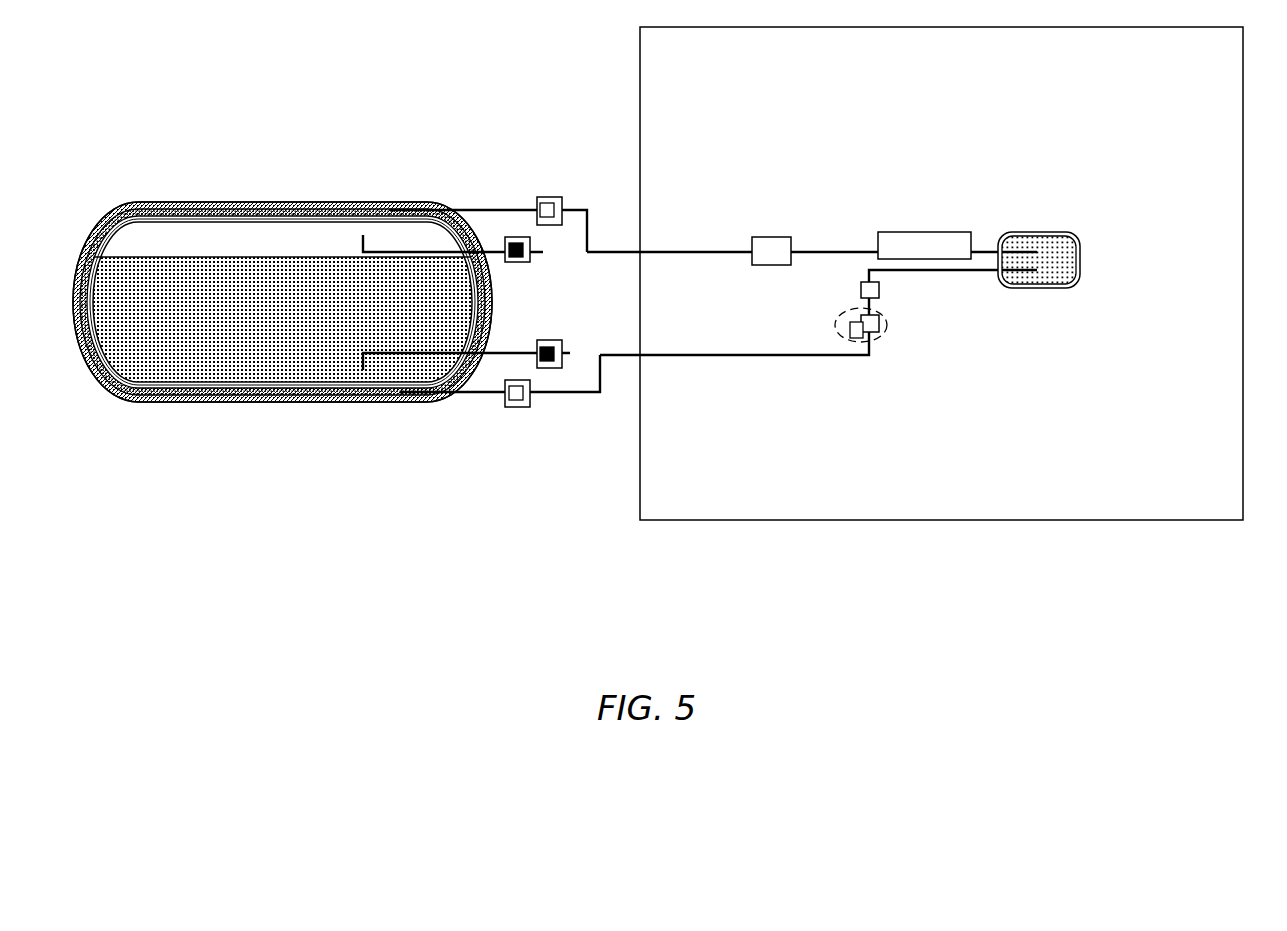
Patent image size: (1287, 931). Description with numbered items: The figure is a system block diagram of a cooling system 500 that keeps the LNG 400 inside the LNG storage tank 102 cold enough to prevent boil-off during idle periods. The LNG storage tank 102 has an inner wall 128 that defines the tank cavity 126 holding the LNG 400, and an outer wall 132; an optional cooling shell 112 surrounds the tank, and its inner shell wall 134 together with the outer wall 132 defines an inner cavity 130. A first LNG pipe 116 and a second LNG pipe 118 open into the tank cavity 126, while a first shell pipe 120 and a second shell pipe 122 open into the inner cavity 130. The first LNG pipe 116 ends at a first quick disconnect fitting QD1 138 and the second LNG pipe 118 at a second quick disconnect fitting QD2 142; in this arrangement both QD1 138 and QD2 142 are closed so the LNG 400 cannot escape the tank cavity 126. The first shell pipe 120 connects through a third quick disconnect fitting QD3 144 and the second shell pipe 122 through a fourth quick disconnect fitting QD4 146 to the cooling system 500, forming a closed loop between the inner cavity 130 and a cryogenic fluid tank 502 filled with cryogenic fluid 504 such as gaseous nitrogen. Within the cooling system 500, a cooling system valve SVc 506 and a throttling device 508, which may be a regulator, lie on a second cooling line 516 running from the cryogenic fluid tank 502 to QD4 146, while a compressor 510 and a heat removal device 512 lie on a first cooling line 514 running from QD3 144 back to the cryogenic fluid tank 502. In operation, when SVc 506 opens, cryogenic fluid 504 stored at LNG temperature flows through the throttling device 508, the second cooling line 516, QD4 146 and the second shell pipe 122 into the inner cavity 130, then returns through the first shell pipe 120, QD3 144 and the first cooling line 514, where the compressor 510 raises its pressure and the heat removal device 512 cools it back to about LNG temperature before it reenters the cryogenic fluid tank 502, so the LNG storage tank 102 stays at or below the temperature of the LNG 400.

The LNG storage tank 102 is at (155, 204).
The optional cooling shell 112 is at (289, 204).
The first LNG pipe 116 is at (384, 253).
The second LNG pipe 118 is at (376, 352).
The first shell pipe 120 is at (468, 208).
The second shell pipe 122 is at (470, 394).
The tank cavity 126 is at (282, 243).
The inner wall 128 is at (318, 378).
The inner cavity 130 is at (157, 399).
The outer wall 132 is at (279, 389).
The inner shell wall 134 is at (204, 390).
The first quick disconnect fitting (QD1) 138 is at (510, 262).
The second quick disconnect fitting (QD2) 142 is at (548, 340).
The third quick disconnect fitting (QD3) 144 is at (549, 197).
The fourth quick disconnect fitting (QD4) 146 is at (517, 407).
The LNG 400 is at (282, 319).
The cooling system 500 is at (941, 273).
The cryogenic fluid tank 502 is at (1082, 280).
The cryogenic fluid 504 is at (1062, 250).
The cooling system valve (SVc) 506 is at (861, 290).
The throttling device 508 is at (836, 328).
The compressor 510 is at (767, 237).
The heat removal device 512 is at (940, 232).
The first cooling line 514 is at (866, 216).
The second cooling line 516 is at (968, 272).